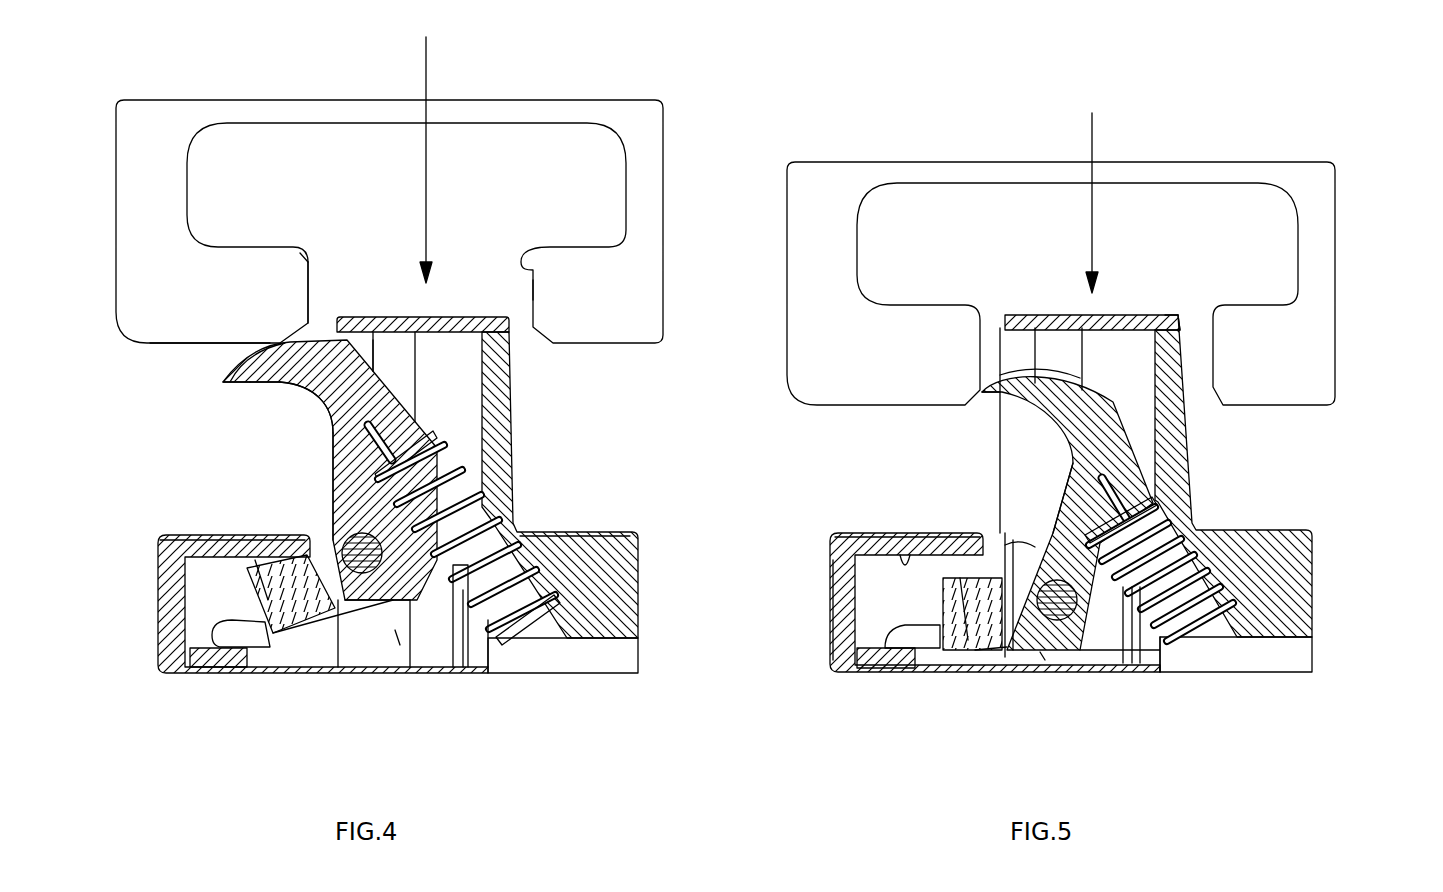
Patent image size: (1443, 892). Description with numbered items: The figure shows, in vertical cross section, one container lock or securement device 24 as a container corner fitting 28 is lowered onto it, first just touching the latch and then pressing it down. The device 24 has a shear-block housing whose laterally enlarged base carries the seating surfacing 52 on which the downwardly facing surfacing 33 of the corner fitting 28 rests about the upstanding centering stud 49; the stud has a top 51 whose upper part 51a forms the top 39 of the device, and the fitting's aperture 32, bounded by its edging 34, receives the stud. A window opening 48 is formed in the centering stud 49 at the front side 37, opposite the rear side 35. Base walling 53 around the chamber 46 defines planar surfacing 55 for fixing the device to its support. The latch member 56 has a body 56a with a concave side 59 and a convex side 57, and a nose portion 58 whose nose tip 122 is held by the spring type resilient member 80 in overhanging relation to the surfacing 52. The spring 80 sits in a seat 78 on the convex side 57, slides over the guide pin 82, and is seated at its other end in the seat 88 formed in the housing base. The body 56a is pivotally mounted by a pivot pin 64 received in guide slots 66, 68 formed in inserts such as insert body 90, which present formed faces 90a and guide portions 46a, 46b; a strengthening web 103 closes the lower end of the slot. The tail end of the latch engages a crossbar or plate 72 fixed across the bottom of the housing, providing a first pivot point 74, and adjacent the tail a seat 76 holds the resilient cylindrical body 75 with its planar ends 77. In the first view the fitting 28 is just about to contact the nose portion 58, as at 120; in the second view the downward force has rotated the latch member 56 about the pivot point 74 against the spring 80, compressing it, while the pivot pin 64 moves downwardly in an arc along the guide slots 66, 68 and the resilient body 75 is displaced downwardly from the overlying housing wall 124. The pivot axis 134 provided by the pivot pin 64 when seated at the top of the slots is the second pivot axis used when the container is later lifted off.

In FIG. 4, the container lock or securement device 24 is at (150, 632).
In FIG. 5, the container lock or securement device 24 is at (1330, 578).
In FIG. 4, the container corner fitting 28 is at (677, 100).
In FIG. 5, the container corner fitting 28 is at (1347, 230).
In FIG. 4, the aperture 32 is at (373, 264).
In FIG. 4, the downwardly facing surfacing 33 is at (195, 345).
In FIG. 4, the aperture edge 34 is at (312, 280).
In FIG. 4, the rear side 35 is at (612, 417).
In FIG. 5, the rear side 35 is at (1305, 460).
In FIG. 4, the front side 37 is at (150, 520).
In FIG. 5, the front side 37 is at (790, 517).
In FIG. 4, the top 39 is at (520, 192).
In FIG. 5, the top 39 is at (1193, 220).
In FIG. 4, the chamber 46 is at (318, 650).
In FIG. 4, the guide portion 46a is at (348, 640).
In FIG. 5, the guide portion 46b is at (1008, 560).
In FIG. 4, the window opening 48 is at (330, 435).
In FIG. 4, the centering stud 49 is at (520, 423).
In FIG. 5, the centering stud 49 is at (1170, 385).
In FIG. 4, the centering stud top 51 is at (458, 316).
In FIG. 5, the centering stud top 51 is at (1120, 313).
In FIG. 5, the top of centering stud 51a is at (1168, 313).
In FIG. 4, the seating surfacing 52 is at (220, 534).
In FIG. 5, the seating surfacing 52 is at (845, 536).
In FIG. 5, the base walling 53 is at (832, 630).
In FIG. 4, the planar surfacing 55 is at (598, 675).
In FIG. 5, the planar surfacing 55 is at (1240, 674).
In FIG. 4, the latch member 56 is at (346, 467).
In FIG. 5, the latch member 56 is at (1122, 445).
In FIG. 5, the latch member body 56a is at (1108, 430).
In FIG. 4, the convex side 57 is at (395, 375).
In FIG. 4, the nose portion 58 is at (258, 370).
In FIG. 5, the nose portion 58 is at (1080, 395).
In FIG. 4, the concave side 59 is at (325, 395).
In FIG. 4, the pivot pin 64 is at (352, 542).
In FIG. 5, the pivot pin 64 is at (1057, 600).
In FIG. 4, the guide slot 66 is at (372, 632).
In FIG. 5, the guide slot 68 is at (1008, 545).
In FIG. 4, the crossbar or plate 72 is at (202, 668).
In FIG. 5, the crossbar or plate 72 is at (870, 660).
In FIG. 4, the first pivot point 74 is at (226, 668).
In FIG. 5, the first pivot point 74 is at (895, 668).
In FIG. 4, the resilient cylindrical body 75 is at (262, 562).
In FIG. 5, the resilient cylindrical body 75 is at (970, 572).
In FIG. 4, the seat 76 is at (290, 640).
In FIG. 5, the seat 76 is at (985, 650).
In FIG. 5, the planar end 77 is at (946, 580).
In FIG. 4, the spring seat 78 is at (420, 445).
In FIG. 4, the spring type resilient member 80 is at (500, 525).
In FIG. 5, the spring type resilient member 80 is at (1195, 530).
In FIG. 4, the guide pin 82 is at (398, 422).
In FIG. 5, the guide pin 82 is at (1140, 480).
In FIG. 4, the seat 88 is at (515, 640).
In FIG. 4, the insert body 90 is at (437, 640).
In FIG. 5, the insert body 90 is at (1108, 655).
In FIG. 4, the formed face 90a is at (450, 625).
In FIG. 4, the strengthening web 103 is at (393, 640).
In FIG. 5, the strengthening web 103 is at (1040, 655).
In FIG. 4, the contact point 120 is at (272, 390).
In FIG. 4, the nose tip 122 is at (235, 380).
In FIG. 5, the nose tip 122 is at (960, 405).
In FIG. 5, the overlying housing wall 124 is at (905, 565).
In FIG. 4, the pivot axis 134 is at (332, 690).